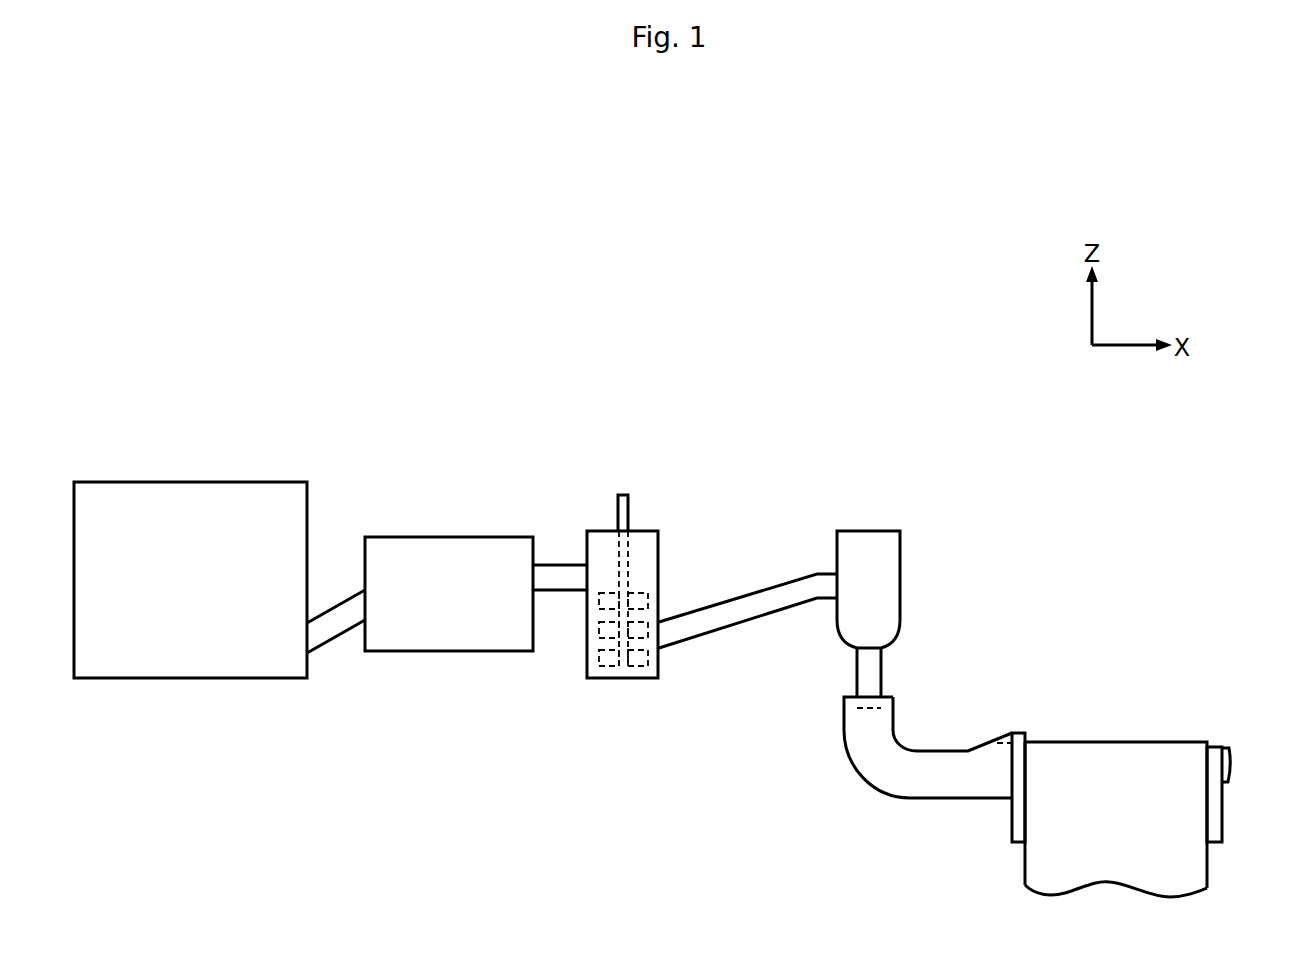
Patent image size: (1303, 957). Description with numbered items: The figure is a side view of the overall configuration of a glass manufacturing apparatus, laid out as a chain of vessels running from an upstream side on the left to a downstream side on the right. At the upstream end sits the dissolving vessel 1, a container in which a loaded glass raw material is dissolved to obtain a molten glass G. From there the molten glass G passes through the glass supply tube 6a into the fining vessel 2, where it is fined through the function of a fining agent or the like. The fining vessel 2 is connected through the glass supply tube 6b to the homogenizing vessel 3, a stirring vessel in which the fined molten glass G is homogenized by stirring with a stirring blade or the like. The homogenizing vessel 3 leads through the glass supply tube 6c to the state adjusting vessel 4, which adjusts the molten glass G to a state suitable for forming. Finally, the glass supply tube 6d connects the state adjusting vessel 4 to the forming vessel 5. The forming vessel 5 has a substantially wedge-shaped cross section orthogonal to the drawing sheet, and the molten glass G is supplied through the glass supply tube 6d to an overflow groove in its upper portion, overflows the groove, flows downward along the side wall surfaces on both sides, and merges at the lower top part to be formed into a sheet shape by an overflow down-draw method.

The dissolving vessel 1 is at (195, 494).
The fining vessel 2 is at (455, 548).
The homogenizing vessel 3 is at (645, 530).
The state adjusting vessel 4 is at (895, 572).
The forming vessel 5 is at (1214, 808).
The molten glass G is at (1120, 757).
The glass supply tube 6a is at (333, 618).
The glass supply tube 6b is at (558, 575).
The glass supply tube 6c is at (741, 602).
The glass supply tube 6d is at (937, 788).